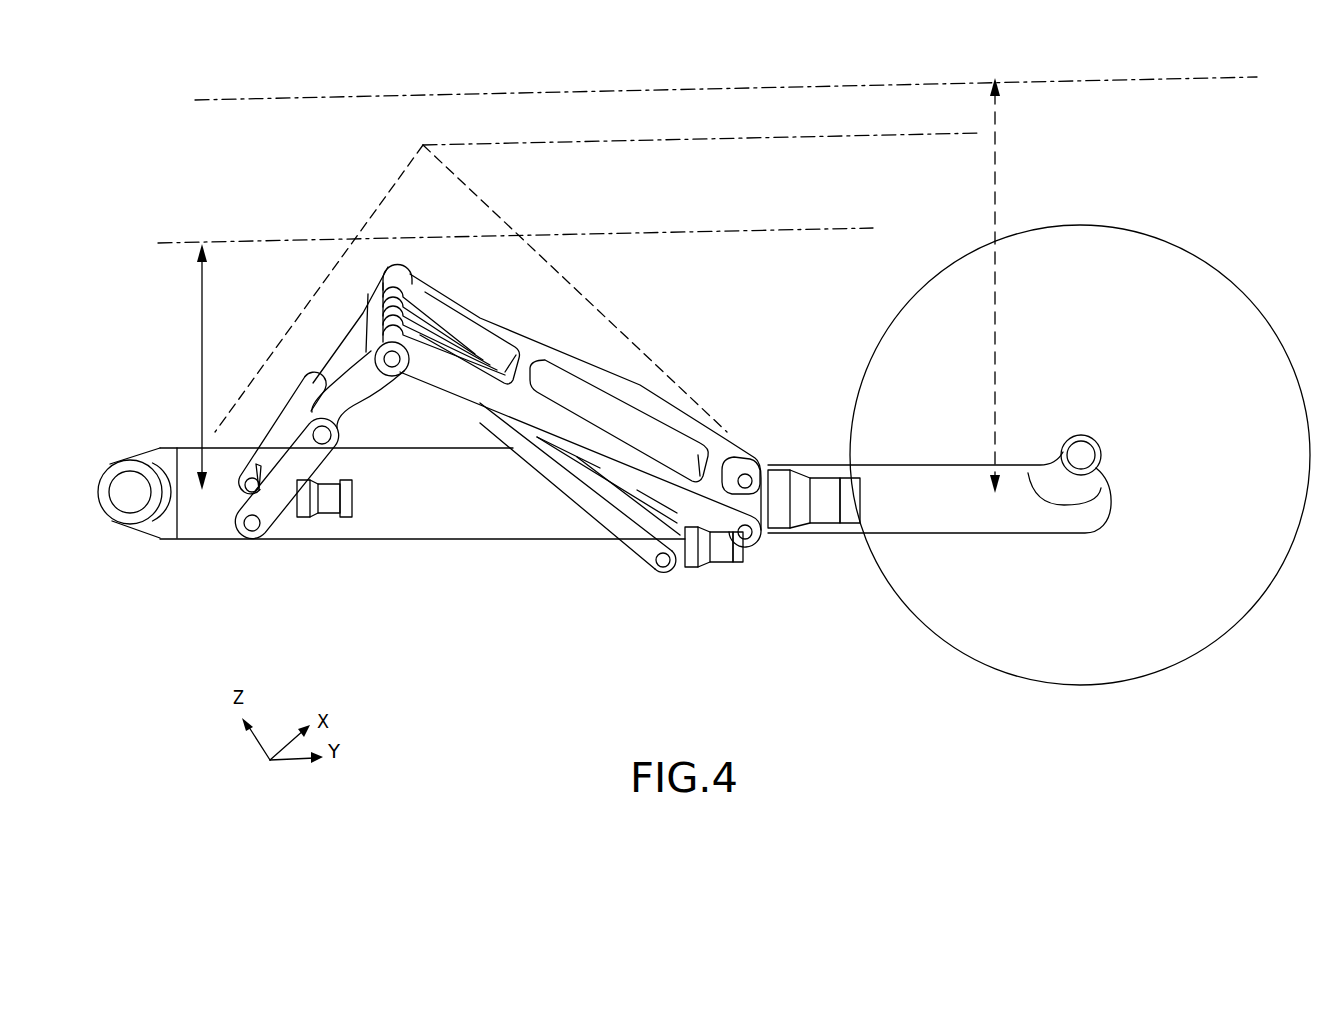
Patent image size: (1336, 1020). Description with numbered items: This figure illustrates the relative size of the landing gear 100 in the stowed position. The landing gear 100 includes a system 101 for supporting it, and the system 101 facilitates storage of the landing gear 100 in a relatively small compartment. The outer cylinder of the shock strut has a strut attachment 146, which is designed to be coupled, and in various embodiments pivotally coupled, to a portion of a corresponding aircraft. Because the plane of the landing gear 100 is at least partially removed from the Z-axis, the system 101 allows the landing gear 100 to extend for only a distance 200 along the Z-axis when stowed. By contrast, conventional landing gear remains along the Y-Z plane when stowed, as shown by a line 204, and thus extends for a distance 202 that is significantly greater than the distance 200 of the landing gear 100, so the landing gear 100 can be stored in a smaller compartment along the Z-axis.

The landing gear 100 is at (147, 141).
The system 101 is at (169, 318).
The strut attachment 146 is at (132, 500).
The distance 200 is at (202, 365).
The distance 202 is at (995, 180).
The line 204 is at (793, 136).